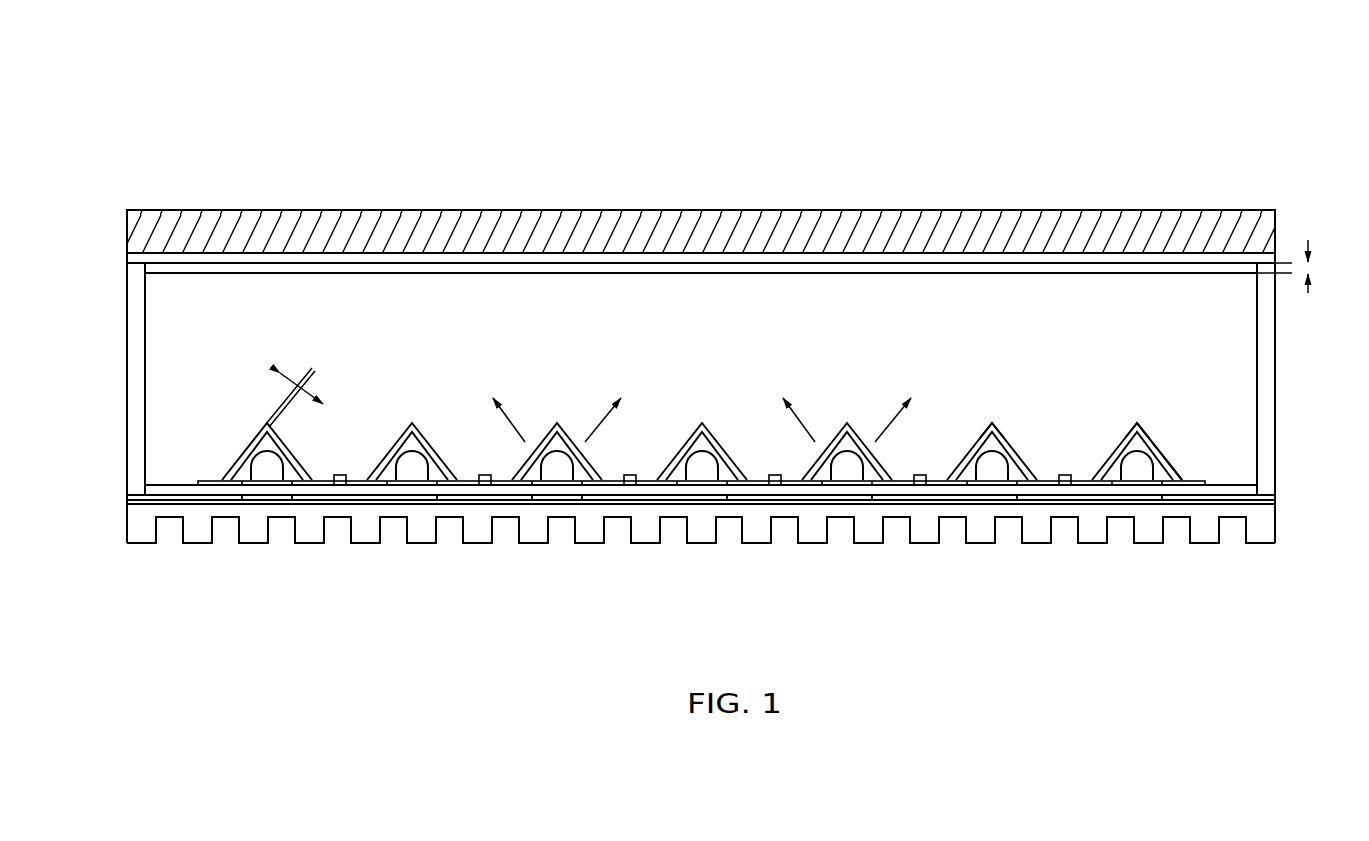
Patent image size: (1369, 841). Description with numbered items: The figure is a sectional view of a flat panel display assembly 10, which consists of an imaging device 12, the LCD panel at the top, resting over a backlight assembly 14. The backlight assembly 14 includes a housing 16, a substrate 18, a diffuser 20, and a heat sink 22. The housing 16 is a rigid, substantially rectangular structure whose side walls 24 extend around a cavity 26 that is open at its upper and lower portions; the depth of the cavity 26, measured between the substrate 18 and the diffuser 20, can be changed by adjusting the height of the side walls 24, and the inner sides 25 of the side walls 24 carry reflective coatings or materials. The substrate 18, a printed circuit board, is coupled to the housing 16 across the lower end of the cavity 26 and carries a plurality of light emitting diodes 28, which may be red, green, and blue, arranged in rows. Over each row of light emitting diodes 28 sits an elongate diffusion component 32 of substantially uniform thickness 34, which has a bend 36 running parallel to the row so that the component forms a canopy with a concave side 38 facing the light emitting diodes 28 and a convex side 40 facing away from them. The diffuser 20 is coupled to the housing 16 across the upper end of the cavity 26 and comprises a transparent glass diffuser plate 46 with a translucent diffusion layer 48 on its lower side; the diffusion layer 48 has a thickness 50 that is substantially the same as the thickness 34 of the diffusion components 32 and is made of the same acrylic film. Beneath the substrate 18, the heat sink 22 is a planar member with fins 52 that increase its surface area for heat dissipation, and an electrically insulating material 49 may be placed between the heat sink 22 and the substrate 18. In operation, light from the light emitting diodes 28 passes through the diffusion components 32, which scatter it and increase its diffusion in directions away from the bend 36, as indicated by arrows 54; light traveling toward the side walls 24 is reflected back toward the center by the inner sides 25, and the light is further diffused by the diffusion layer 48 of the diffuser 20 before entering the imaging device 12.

The flat panel display assembly 10 is at (693, 305).
The imaging device 12 is at (152, 210).
The backlight assembly 14 is at (120, 265).
The housing 16 is at (1268, 366).
The substrate 18 is at (637, 491).
The diffuser 20 is at (102, 237).
The heat sink 22 is at (1247, 510).
The side walls 24 is at (140, 362).
The inner sides 25 is at (1262, 440).
The cavity 26 is at (282, 328).
The light emitting diodes 28 is at (253, 472).
The diffusion components 32 is at (426, 434).
The thickness 34 is at (301, 388).
The bend 36 is at (992, 421).
The concave sides 38 is at (1162, 467).
The convex sides 40 is at (1158, 447).
The diffuser plate 46 is at (1278, 257).
The diffusion layer 48 is at (1222, 274).
The electrically insulating material 49 is at (573, 504).
The thickness 50 is at (1310, 268).
The fins 52 is at (766, 539).
The arrows 54 is at (503, 412).